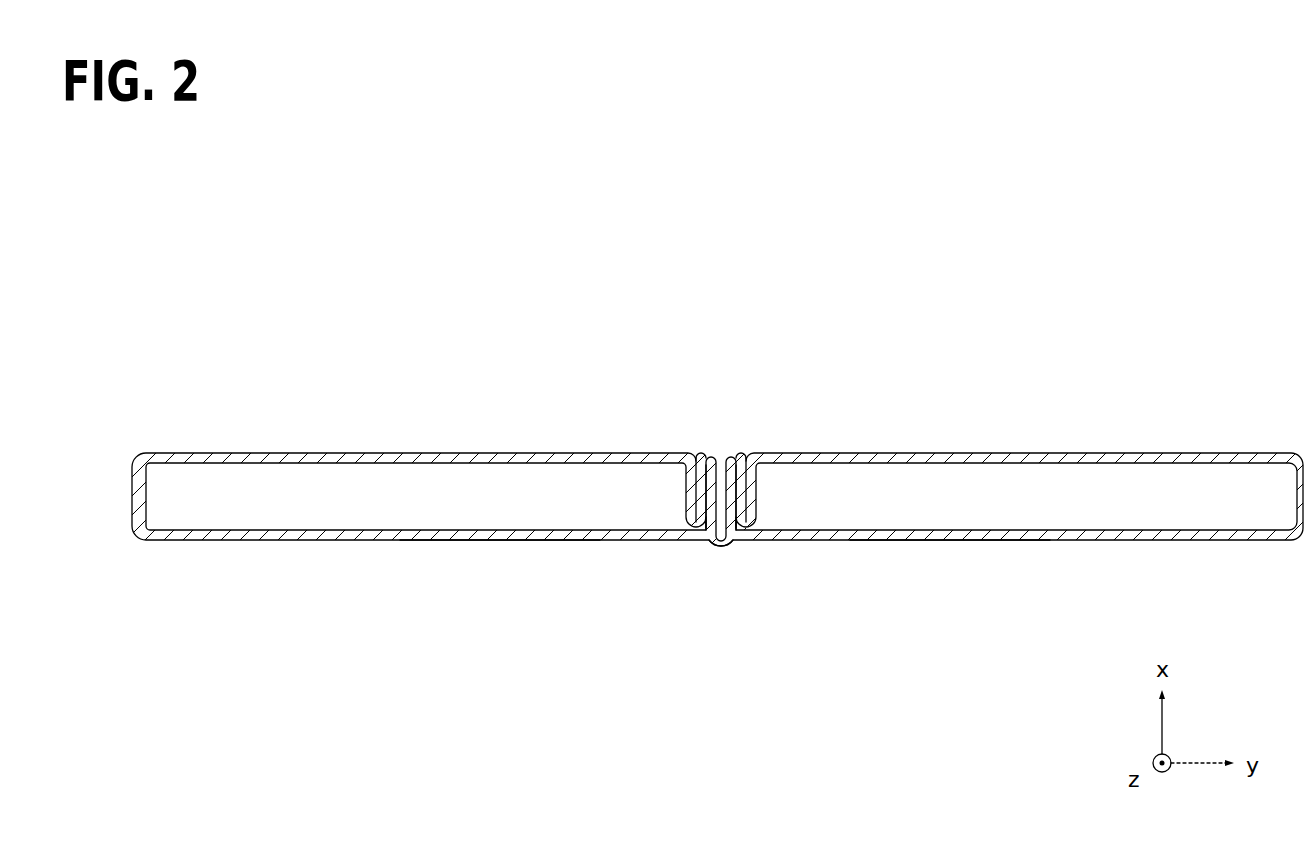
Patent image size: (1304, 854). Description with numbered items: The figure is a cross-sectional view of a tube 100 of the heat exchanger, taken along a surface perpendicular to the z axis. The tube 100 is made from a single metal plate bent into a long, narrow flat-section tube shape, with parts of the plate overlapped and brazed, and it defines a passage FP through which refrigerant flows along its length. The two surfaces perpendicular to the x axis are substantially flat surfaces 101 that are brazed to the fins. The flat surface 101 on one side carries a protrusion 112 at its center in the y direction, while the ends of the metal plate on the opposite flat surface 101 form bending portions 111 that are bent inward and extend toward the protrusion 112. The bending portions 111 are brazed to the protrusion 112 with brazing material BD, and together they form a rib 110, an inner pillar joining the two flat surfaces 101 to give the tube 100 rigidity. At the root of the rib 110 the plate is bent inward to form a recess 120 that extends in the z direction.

The tube 100 is at (1091, 388).
The flat surface 101 is at (370, 453).
The rib 110 is at (715, 485).
The bending portion 111 is at (688, 495).
The protrusion 112 is at (723, 453).
The recess 120 is at (702, 446).
The brazing material BD is at (737, 543).
The passage FP is at (495, 520).